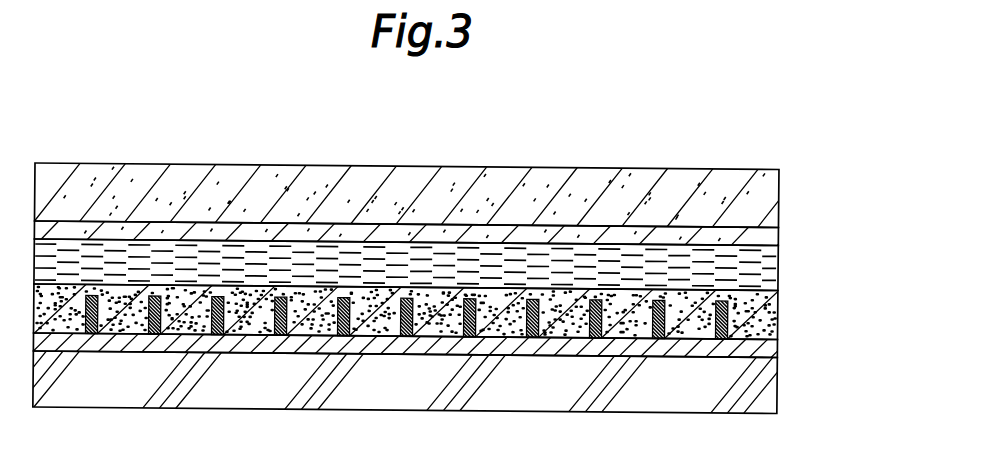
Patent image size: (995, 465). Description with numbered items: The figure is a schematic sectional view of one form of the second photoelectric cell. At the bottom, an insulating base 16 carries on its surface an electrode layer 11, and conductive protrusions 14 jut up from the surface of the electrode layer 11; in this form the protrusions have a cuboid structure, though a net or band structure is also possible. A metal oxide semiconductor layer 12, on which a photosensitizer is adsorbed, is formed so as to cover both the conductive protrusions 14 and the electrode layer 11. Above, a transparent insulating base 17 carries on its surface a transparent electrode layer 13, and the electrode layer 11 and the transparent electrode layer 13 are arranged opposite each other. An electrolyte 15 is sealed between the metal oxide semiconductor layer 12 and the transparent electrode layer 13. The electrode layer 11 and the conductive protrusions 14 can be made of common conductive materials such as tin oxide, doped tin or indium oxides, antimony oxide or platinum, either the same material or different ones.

The electrode layer 11 is at (765, 350).
The metal oxide semiconductor layer 12 is at (765, 329).
The transparent electrode layer 13 is at (762, 236).
The conductive protrusions 14 is at (728, 304).
The electrolyte 15 is at (762, 271).
The insulating base 16 is at (767, 395).
The transparent insulating base 17 is at (677, 190).